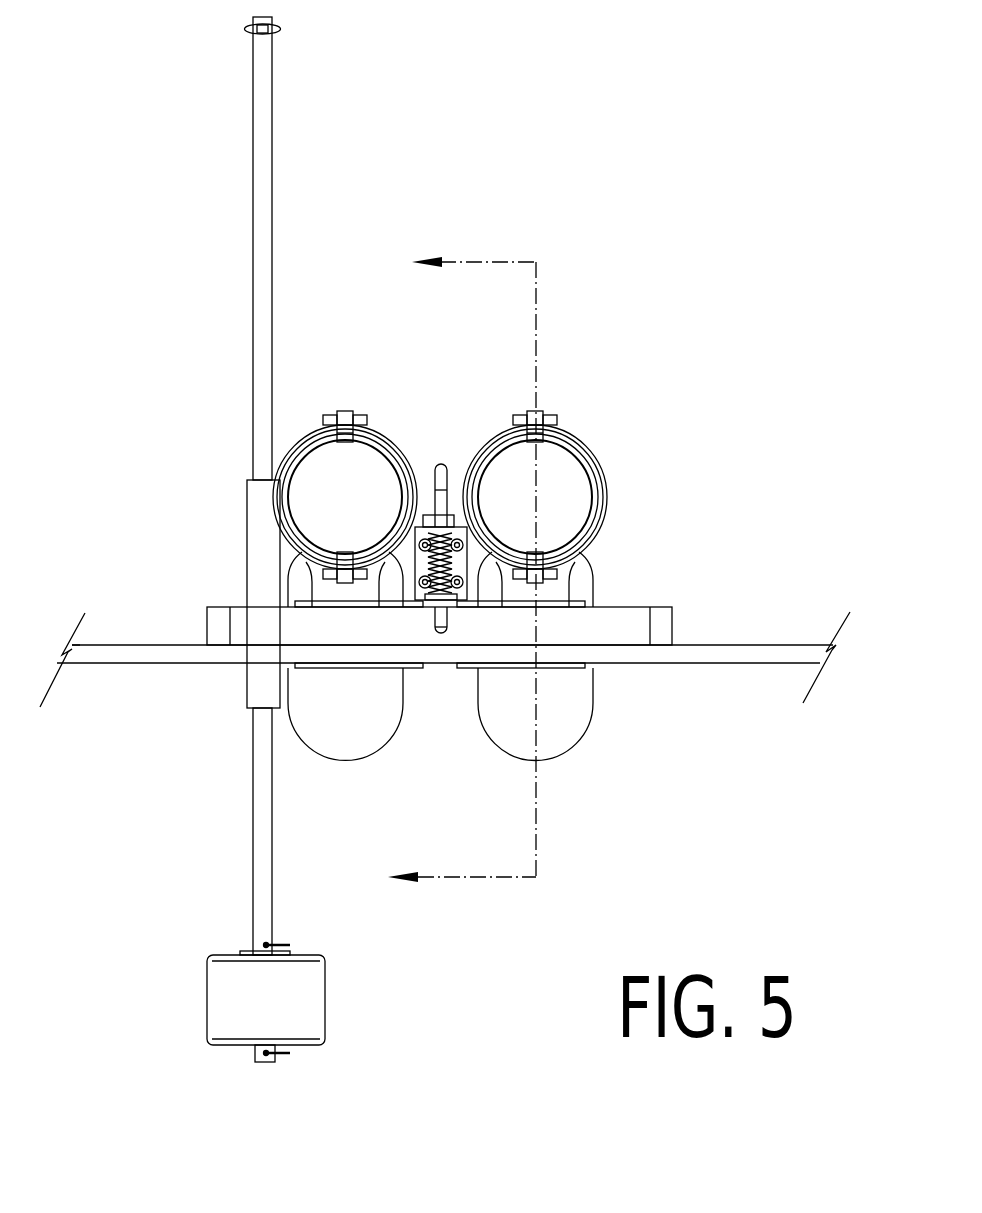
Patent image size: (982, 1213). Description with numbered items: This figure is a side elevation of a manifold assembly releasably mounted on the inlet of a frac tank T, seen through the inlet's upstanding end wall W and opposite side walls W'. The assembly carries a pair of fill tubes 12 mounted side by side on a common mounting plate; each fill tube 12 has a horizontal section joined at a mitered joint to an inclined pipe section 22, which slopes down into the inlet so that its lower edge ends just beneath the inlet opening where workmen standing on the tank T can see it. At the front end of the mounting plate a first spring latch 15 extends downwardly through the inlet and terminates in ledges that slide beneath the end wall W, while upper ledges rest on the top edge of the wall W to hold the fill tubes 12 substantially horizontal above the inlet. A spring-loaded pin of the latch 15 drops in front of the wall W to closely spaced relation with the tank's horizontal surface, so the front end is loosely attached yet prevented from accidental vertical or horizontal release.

The fill tube 12 is at (603, 569).
The first spring latch 15 is at (436, 445).
The pipe section 22 is at (338, 702).
The end wall W is at (445, 691).
The side wall W' is at (444, 580).
The frac tank T is at (762, 668).